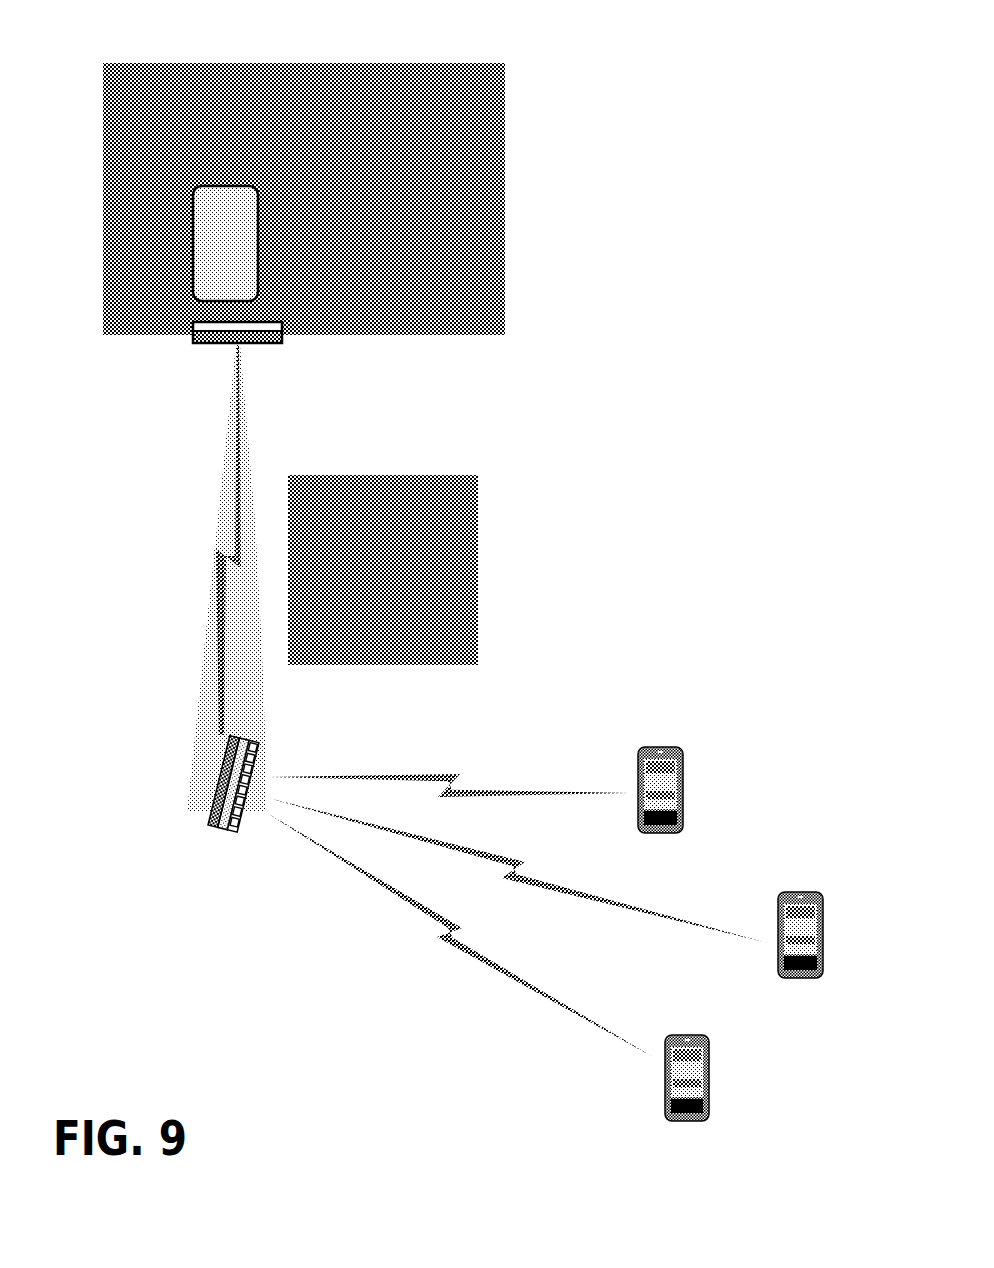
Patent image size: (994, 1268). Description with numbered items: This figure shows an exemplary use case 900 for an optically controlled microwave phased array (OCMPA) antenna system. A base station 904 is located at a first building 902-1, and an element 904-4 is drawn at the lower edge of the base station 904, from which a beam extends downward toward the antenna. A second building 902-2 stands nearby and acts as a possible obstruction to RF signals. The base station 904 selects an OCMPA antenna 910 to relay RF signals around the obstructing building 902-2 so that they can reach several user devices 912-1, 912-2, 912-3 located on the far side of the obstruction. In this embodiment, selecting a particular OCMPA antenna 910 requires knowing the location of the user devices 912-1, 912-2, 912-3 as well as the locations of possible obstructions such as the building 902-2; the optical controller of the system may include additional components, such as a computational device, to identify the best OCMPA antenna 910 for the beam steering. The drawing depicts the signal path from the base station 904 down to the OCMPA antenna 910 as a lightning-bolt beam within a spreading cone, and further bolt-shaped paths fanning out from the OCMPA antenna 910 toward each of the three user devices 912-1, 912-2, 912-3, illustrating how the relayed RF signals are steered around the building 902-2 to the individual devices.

The environment 900 is at (751, 64).
The building 902-1 is at (505, 283).
The building 902-2 is at (478, 568).
The base station 904 is at (193, 247).
The base station antenna 904-4 is at (204, 344).
The OCMPA antenna 910 is at (208, 830).
The user device 912-1 is at (692, 858).
The user device 912-2 is at (832, 1005).
The user device 912-3 is at (719, 1147).